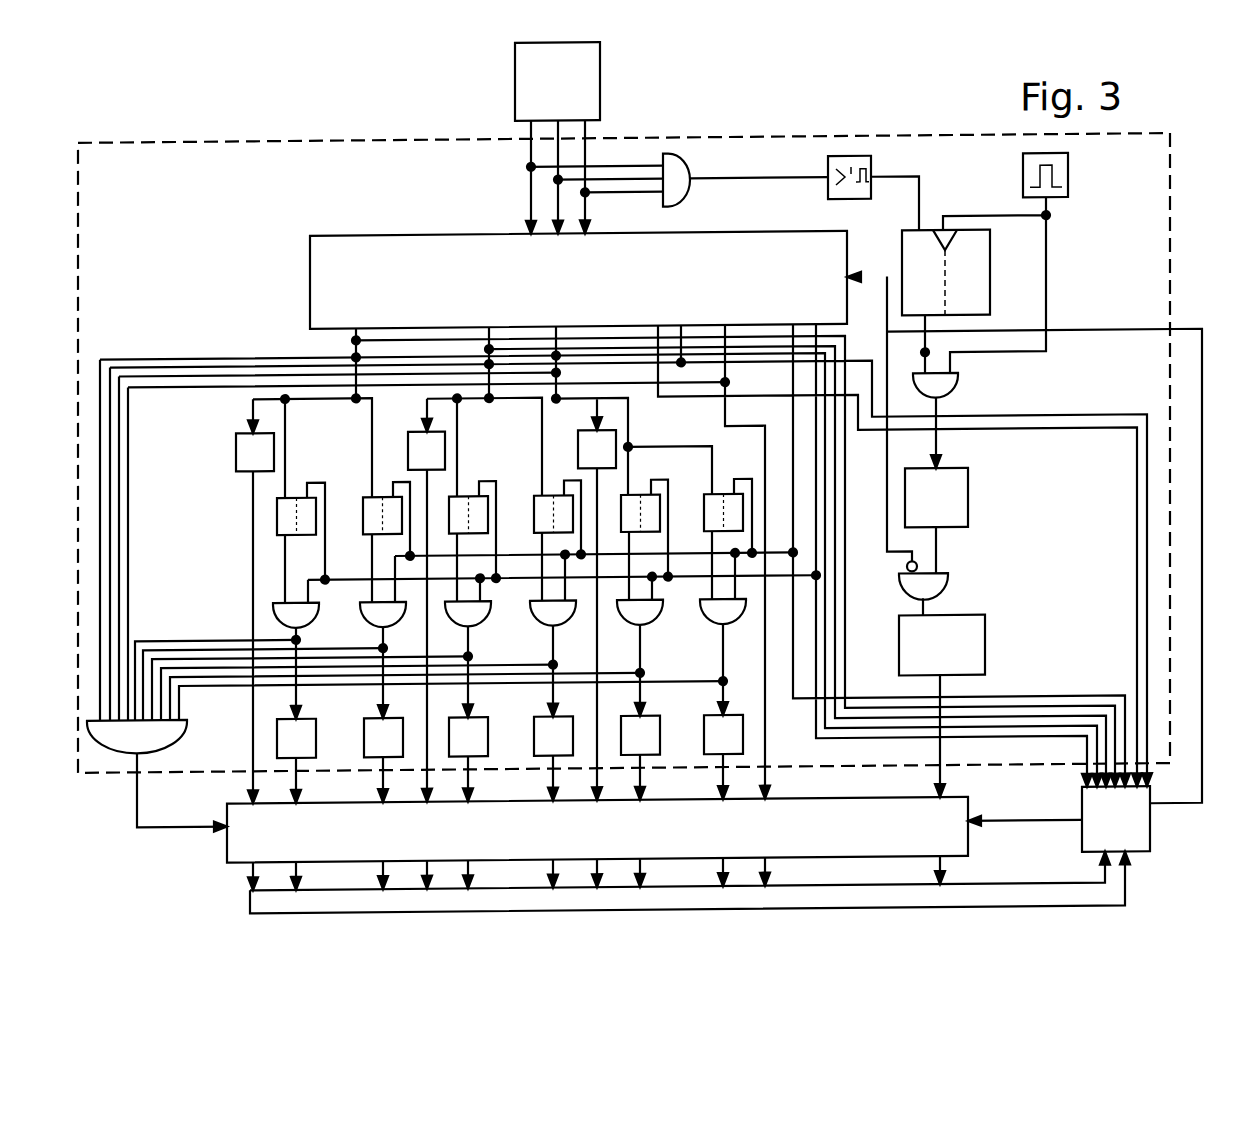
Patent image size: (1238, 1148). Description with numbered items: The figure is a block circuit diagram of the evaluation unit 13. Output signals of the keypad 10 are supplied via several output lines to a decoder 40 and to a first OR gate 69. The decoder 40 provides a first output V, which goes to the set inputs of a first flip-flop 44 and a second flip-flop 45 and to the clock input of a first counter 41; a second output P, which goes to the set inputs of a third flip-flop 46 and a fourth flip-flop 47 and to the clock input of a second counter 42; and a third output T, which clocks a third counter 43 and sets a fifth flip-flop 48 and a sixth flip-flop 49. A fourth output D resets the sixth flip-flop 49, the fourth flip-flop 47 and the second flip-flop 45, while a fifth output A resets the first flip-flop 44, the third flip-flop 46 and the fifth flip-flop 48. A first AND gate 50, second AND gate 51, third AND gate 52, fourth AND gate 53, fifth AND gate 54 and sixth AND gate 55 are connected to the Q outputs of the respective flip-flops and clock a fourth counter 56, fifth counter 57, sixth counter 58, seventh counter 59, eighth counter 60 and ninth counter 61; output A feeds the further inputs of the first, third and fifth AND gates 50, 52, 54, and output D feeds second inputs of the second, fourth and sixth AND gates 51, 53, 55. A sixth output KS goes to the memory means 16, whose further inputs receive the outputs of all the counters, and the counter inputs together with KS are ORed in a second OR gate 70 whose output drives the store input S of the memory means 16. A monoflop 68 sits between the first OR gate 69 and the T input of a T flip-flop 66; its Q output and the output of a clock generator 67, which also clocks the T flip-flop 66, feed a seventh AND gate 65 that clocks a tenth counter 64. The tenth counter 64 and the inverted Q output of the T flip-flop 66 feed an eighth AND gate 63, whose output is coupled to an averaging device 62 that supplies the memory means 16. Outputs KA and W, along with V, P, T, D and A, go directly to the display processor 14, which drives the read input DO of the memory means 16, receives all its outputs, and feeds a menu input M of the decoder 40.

The keypad 10 is at (600, 73).
The evaluation unit 13 is at (190, 146).
The display processor 14 is at (1150, 833).
The memory means 16 is at (230, 841).
The decoder 40 is at (310, 272).
The first counter 41 is at (236, 451).
The second counter 42 is at (408, 440).
The third counter 43 is at (578, 446).
The first flip-flop 44 is at (296, 495).
The second flip-flop 45 is at (368, 495).
The third flip-flop 46 is at (470, 495).
The fourth flip-flop 47 is at (538, 495).
The fifth flip-flop 48 is at (637, 495).
The sixth flip-flop 49 is at (729, 495).
The first AND gate 50 is at (298, 604).
The second AND gate 51 is at (372, 621).
The third AND gate 52 is at (478, 620).
The fourth AND gate 53 is at (548, 624).
The fifth AND gate 54 is at (650, 622).
The sixth AND gate 55 is at (718, 625).
The fourth counter 56 is at (316, 726).
The fifth counter 57 is at (364, 741).
The sixth counter 58 is at (488, 728).
The seventh counter 59 is at (534, 741).
The eighth counter 60 is at (660, 730).
The ninth counter 61 is at (738, 716).
The averaging device 62 is at (985, 650).
The eighth AND gate 63 is at (948, 588).
The tenth counter 64 is at (968, 500).
The seventh AND gate 65 is at (958, 388).
The T flip-flop 66 is at (910, 236).
The clock generator 67 is at (1068, 177).
The monoflop 68 is at (828, 184).
The first OR gate 69 is at (690, 172).
The second OR gate 70 is at (170, 738).